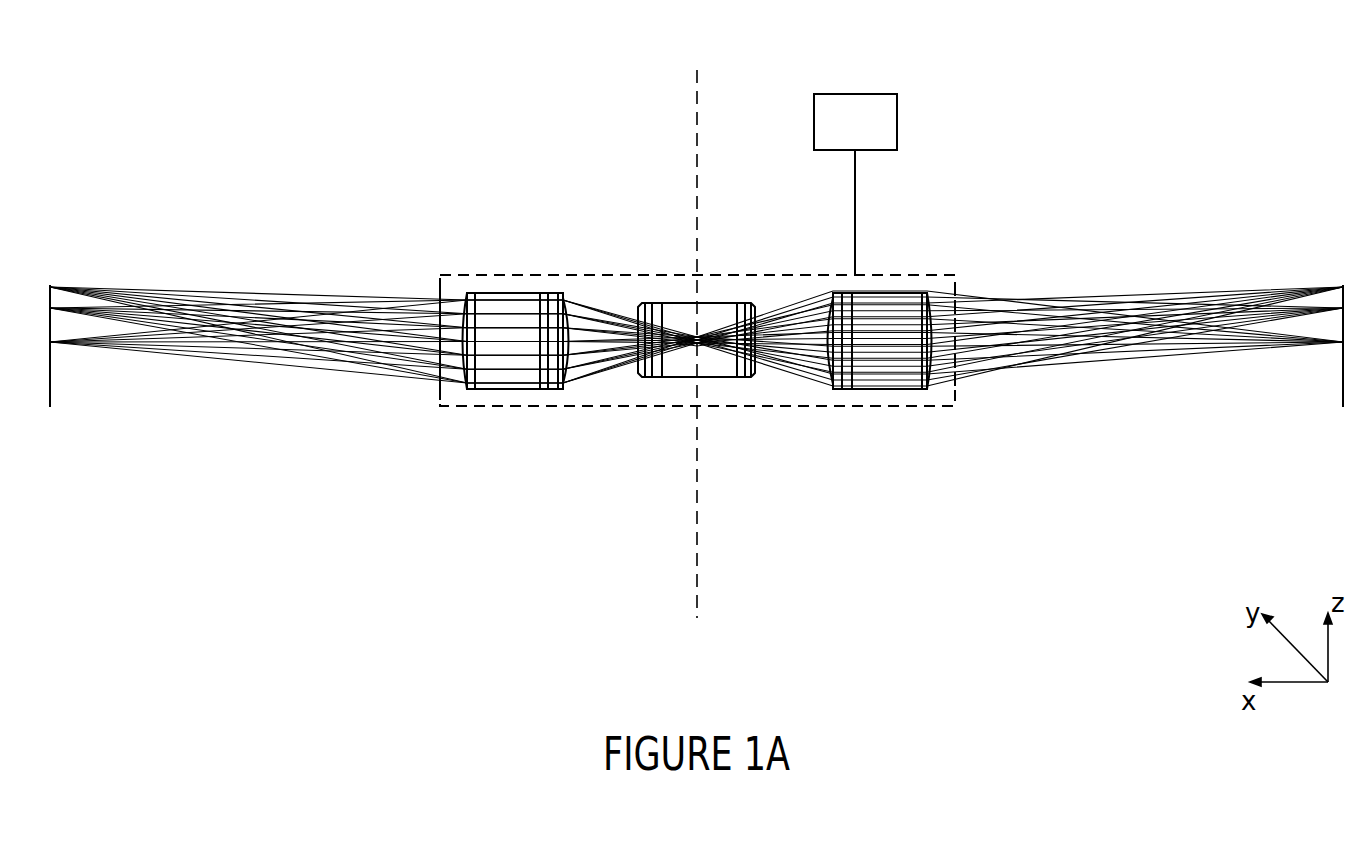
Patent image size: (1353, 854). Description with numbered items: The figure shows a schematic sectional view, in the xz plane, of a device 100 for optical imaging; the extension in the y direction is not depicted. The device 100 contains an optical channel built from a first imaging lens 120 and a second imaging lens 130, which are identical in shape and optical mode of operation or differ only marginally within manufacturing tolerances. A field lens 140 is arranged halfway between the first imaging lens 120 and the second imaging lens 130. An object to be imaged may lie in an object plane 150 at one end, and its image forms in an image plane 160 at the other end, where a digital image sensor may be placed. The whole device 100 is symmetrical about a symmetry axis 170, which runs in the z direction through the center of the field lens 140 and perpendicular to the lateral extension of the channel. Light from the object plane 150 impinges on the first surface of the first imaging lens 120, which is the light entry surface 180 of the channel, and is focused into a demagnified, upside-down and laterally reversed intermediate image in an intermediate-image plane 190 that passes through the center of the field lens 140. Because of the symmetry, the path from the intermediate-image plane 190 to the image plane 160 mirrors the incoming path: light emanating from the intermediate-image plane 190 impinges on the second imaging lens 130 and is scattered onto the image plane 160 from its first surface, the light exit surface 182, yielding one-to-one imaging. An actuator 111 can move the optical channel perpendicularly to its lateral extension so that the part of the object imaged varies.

The device for optical imaging 100 is at (1112, 185).
The actuator 111 is at (897, 120).
The first imaging lens 120 is at (518, 390).
The second imaging lens 130 is at (881, 390).
The field lens 140 is at (675, 378).
The object plane 150 is at (50, 372).
The image plane 160 is at (1343, 385).
The symmetry axis 170 is at (697, 583).
The light entry surface 180 is at (468, 372).
The light exit surface 182 is at (946, 385).
The intermediate-image plane 190 is at (718, 365).